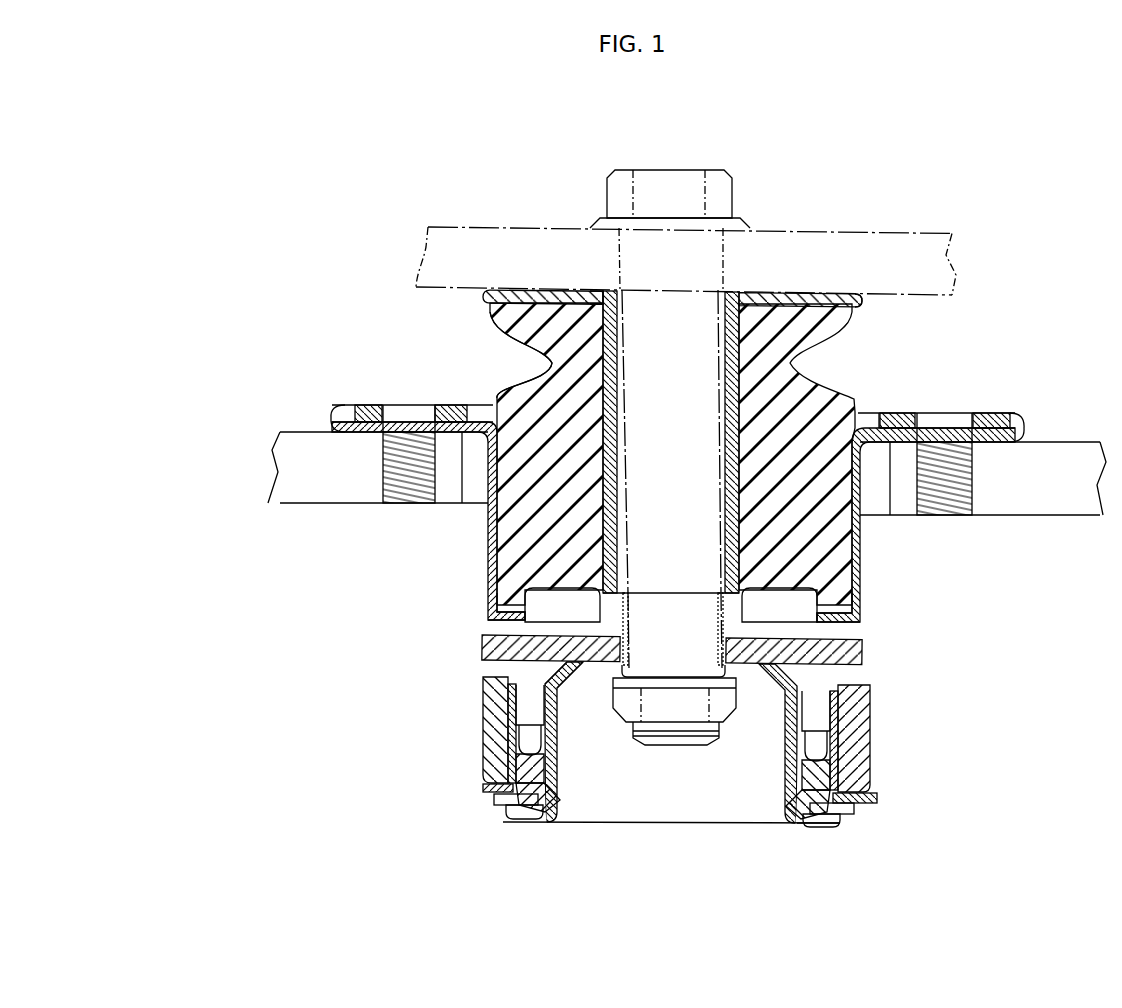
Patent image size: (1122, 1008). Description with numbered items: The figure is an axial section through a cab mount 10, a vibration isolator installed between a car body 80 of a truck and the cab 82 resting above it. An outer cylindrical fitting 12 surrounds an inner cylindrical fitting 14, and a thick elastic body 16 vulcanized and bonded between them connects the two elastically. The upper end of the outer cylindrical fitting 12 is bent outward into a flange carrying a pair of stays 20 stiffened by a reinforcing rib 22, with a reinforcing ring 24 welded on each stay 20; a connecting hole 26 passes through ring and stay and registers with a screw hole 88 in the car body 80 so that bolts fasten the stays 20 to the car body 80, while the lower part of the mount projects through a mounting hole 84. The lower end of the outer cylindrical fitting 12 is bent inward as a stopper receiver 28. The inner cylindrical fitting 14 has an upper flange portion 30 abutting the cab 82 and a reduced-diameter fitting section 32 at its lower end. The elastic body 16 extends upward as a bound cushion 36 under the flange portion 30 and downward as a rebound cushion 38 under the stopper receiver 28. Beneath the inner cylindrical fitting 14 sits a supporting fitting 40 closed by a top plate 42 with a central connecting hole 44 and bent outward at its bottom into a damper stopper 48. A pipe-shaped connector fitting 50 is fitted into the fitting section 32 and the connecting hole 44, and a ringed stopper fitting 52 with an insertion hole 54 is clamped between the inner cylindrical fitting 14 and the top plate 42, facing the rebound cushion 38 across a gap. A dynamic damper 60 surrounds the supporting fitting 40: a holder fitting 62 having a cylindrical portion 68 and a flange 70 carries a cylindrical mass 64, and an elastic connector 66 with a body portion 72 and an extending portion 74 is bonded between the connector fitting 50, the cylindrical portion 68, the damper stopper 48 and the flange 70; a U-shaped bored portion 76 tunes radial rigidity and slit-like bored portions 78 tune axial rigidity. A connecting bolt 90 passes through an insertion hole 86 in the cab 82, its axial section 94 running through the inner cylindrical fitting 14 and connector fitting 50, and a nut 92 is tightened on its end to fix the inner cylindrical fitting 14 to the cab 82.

The cab mount 10 is at (1015, 311).
The outer cylindrical fitting 12 is at (862, 581).
The inner cylindrical fitting 14 is at (770, 294).
The elastic body 16 is at (849, 393).
The stays 20 is at (360, 432).
The reinforcing rib 22 is at (1027, 426).
The reinforcing ring 24 is at (356, 405).
The connecting hole 26 is at (384, 405).
The stopper receiver 28 is at (500, 611).
The flange portion 30 is at (839, 294).
The fitting section 32 is at (643, 606).
The bound cushion 36 is at (547, 348).
The rebound cushion 38 is at (853, 617).
The supporting fitting 40 is at (562, 816).
The top plate 42 is at (592, 681).
The connecting hole 44 is at (717, 657).
The damper stopper 48 is at (856, 823).
The connector fitting 50 is at (688, 592).
The stopper fitting 52 is at (482, 646).
The insertion hole 54 is at (630, 650).
The dynamic damper 60 is at (486, 813).
The holder fitting 62 is at (879, 805).
The mass 64 is at (873, 730).
The elastic connector 66 is at (549, 779).
The cylindrical portion 68 is at (485, 713).
The flange 70 is at (483, 788).
The body portion 72 is at (803, 791).
The extending portion 74 is at (836, 825).
The bored portion 76 is at (858, 713).
The bored portion 78 is at (514, 820).
The car body 80 is at (308, 504).
The cab 82 is at (916, 232).
The mounting hole 84 is at (464, 492).
The insertion hole 86 is at (631, 252).
The screw hole 88 is at (392, 504).
The connecting bolt 90 is at (728, 180).
The nut 92 is at (733, 719).
The axial section 94 is at (600, 297).